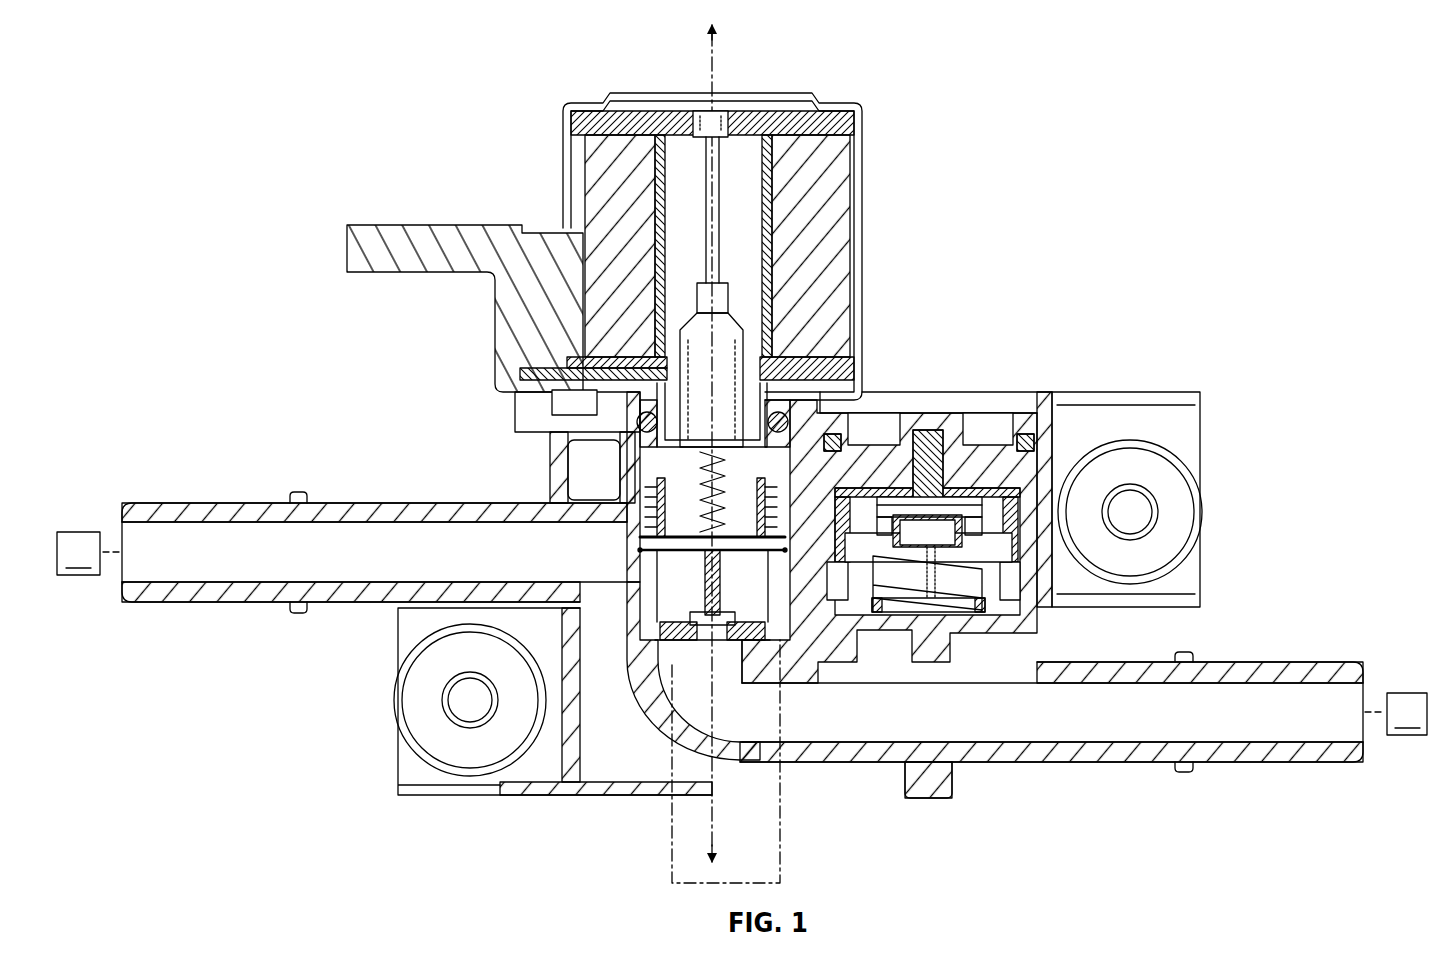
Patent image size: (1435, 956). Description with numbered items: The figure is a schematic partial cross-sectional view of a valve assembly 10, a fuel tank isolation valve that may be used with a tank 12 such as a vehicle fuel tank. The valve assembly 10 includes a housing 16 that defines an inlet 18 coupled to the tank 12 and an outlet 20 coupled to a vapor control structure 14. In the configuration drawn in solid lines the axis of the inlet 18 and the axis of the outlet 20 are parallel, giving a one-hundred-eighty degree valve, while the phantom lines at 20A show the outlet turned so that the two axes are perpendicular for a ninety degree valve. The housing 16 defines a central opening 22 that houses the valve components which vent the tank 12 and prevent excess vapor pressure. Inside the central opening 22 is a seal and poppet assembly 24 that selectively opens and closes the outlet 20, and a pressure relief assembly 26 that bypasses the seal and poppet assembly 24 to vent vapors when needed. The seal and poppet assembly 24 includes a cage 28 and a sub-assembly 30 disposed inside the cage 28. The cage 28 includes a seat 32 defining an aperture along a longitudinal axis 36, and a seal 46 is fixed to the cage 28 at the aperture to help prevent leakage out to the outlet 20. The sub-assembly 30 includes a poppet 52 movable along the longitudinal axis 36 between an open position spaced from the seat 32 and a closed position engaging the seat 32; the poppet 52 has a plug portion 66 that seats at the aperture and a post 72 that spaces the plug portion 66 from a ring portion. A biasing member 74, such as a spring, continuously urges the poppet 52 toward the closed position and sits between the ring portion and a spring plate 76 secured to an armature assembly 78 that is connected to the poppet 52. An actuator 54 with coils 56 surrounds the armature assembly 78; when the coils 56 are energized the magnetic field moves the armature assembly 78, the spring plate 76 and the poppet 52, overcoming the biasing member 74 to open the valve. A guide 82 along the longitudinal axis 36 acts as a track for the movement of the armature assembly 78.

The valve assembly 10 is at (990, 107).
The tank 12 is at (88, 553).
The vapor control structure 14 is at (1396, 714).
The housing 16 is at (1003, 403).
The inlet 18 is at (172, 567).
The outlet 20 is at (1297, 712).
The outlet (turned, 90 degree configuration) 20A is at (780, 835).
The central opening 22 is at (685, 205).
The seal and poppet assembly 24 is at (686, 522).
The pressure relief assembly 26 is at (1003, 588).
The cage 28 is at (843, 405).
The sub-assembly 30 is at (735, 273).
The seat 32 is at (758, 598).
The longitudinal axis 36 is at (720, 63).
The seal 46 is at (702, 645).
The poppet 52 is at (662, 630).
The actuator 54 is at (866, 200).
The coils 56 is at (798, 202).
The plug portion 66 is at (770, 640).
The post 72 is at (778, 560).
The biasing member 74 is at (702, 475).
The spring plate 76 is at (700, 525).
The armature assembly 78 is at (727, 348).
The guide 82 is at (858, 122).